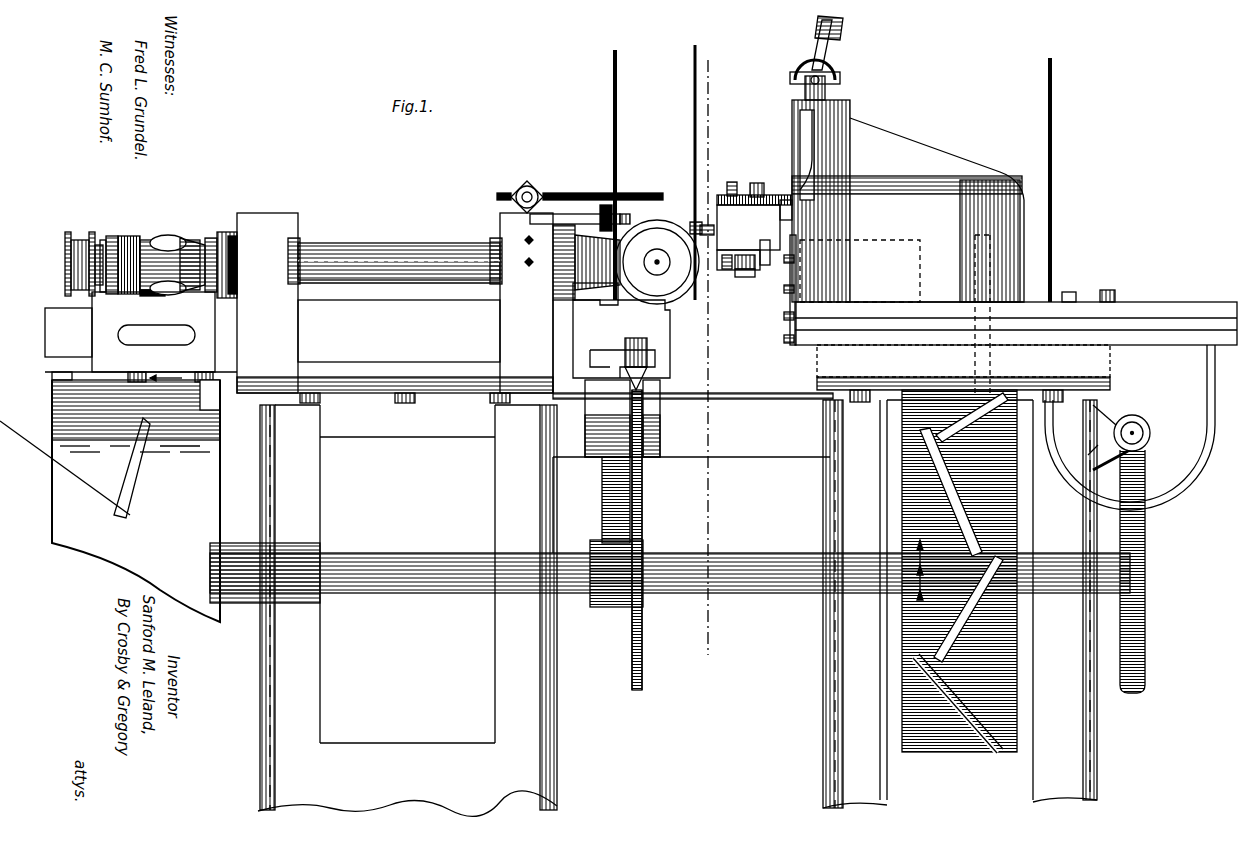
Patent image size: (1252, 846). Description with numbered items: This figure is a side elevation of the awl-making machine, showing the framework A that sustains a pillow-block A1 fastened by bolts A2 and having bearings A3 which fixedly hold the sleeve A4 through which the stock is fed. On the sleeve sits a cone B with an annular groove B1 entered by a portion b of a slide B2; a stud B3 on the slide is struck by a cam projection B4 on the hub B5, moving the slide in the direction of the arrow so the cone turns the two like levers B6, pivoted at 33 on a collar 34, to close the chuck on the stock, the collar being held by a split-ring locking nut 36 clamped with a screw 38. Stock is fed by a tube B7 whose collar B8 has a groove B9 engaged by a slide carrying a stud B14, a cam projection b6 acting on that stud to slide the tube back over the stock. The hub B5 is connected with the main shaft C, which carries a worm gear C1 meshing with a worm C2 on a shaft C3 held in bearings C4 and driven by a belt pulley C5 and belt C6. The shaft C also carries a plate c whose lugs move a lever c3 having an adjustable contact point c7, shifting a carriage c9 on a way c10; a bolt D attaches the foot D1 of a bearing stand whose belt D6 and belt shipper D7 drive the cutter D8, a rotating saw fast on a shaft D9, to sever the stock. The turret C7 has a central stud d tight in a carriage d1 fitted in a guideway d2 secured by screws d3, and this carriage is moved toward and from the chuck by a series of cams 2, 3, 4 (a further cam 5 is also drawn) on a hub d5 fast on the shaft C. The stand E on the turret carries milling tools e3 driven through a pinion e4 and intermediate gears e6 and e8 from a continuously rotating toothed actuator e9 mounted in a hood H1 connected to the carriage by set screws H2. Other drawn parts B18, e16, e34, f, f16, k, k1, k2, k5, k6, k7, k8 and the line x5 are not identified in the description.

The framework A is at (830, 488).
The pillow-block A1 is at (506, 333).
The bolts A2 is at (495, 400).
The bearings A3 is at (292, 290).
The sleeve A4 is at (352, 250).
The cone B is at (190, 240).
The annular groove B1 is at (222, 232).
The slide B2 is at (153, 332).
The stud B3 is at (215, 372).
The cam projection B4 is at (216, 405).
The hub B5 is at (215, 460).
The levers B6 is at (170, 240).
The feeding tube B7 is at (58, 369).
The collar B8 is at (68, 258).
The annular groove B9 is at (82, 242).
The stud B14 is at (130, 372).
The box B18 is at (68, 332).
The slide portion b is at (237, 265).
The cam projection b6 is at (75, 468).
The pivot 33 is at (129, 240).
The collar 34 is at (124, 295).
The locking nut 36 is at (108, 240).
The clamping screw 38 is at (100, 240).
The main shaft C is at (408, 556).
The worm toothed gear C1 is at (1146, 562).
The worm C2 is at (1150, 432).
The worm shaft C3 is at (1118, 430).
The bearings C4 is at (1090, 458).
The belt pulley C5 is at (1130, 430).
The belt C6 is at (1051, 218).
The turret C7 is at (905, 240).
The plate c is at (643, 676).
The lever c3 is at (640, 495).
The adjustable contact point c7 is at (655, 376).
The carriage c9 is at (666, 316).
The way c10 is at (623, 368).
The bolt D is at (615, 283).
The foot D1 is at (594, 285).
The belt D6 is at (612, 134).
The belt shipper D7 is at (591, 215).
The cutter D8 is at (624, 217).
The cutter shaft D9 is at (658, 262).
The central stud d is at (968, 365).
The carriage d1 is at (1155, 325).
The guideway d2 is at (832, 365).
The screws d3 is at (860, 403).
The hub d5 is at (933, 571).
The stand E is at (782, 222).
The milling tools e3 is at (745, 270).
The pinion e4 is at (722, 280).
The intermediate gear e6 is at (754, 181).
The intermediate gear e8 is at (775, 200).
The toothed actuator wheel e9 is at (785, 205).
The nut e16 is at (739, 247).
The bolt e34 is at (763, 246).
The nut f is at (702, 259).
The rod f16 is at (697, 225).
The hood H1 is at (940, 158).
The set screws H2 is at (1067, 282).
The bar k is at (640, 196).
The end k1 is at (512, 200).
The bearing k2 is at (527, 186).
The housing k5 is at (792, 128).
The handle k6 is at (832, 45).
The pivot k7 is at (808, 52).
The knob k8 is at (812, 28).
The center line x5 is at (713, 365).
The cam 2 is at (940, 390).
The cam 3 is at (951, 492).
The cam 4 is at (958, 584).
The cam bar 5 is at (958, 711).